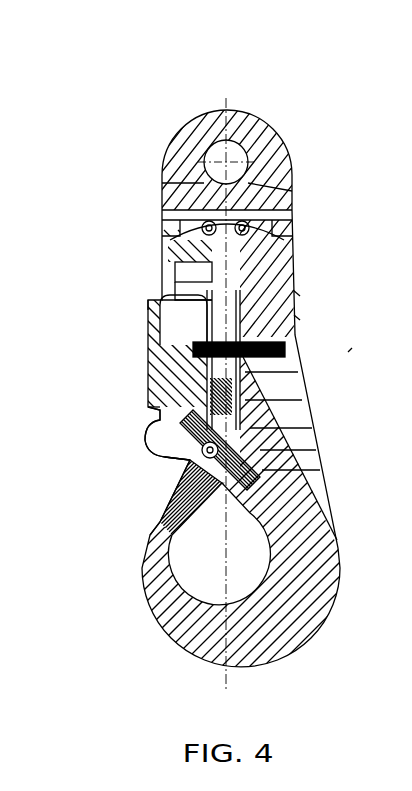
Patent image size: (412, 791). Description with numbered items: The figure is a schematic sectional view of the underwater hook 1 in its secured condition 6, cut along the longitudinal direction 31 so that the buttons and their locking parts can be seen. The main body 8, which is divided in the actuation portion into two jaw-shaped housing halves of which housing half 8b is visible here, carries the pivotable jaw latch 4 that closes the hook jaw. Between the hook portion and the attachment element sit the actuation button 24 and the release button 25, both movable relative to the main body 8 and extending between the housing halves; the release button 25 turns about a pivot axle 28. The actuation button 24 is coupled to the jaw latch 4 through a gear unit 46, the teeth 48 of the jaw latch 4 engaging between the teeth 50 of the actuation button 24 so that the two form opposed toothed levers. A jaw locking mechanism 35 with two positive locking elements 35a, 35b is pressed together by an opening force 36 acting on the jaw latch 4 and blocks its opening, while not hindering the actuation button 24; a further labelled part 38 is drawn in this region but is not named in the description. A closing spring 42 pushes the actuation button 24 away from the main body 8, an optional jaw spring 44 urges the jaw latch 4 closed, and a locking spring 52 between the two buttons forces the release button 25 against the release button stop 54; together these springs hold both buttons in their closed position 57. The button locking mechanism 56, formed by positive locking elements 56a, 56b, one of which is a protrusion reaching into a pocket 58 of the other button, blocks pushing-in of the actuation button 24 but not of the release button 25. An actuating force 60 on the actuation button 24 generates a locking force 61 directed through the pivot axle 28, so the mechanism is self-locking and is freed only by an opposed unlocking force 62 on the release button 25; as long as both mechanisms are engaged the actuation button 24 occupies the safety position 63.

The underwater hook 1 is at (318, 113).
The jaw latch 4 is at (165, 515).
The secured condition 6 is at (355, 349).
The main body 8 is at (338, 534).
The housing half 8b is at (284, 463).
The actuation button 24 is at (165, 345).
The release button 25 is at (293, 270).
The pivot axle 28 is at (165, 211).
The longitudinal direction 31 is at (222, 554).
The jaw locking mechanism 35 is at (286, 468).
The positive locking element 35a is at (298, 420).
The positive locking element 35b is at (298, 442).
The opening force 36 is at (177, 503).
The stop 38 is at (297, 372).
The closing spring 42 is at (168, 188).
The jaw spring 44 is at (298, 500).
The gear unit 46 is at (147, 448).
The teeth 48 is at (297, 392).
The teeth 50 is at (297, 355).
The locking spring 52 is at (150, 372).
The release button stop 54 is at (293, 218).
The button locking mechanism 56 is at (290, 232).
The positive locking element 56a is at (173, 285).
The positive locking element 56b is at (174, 266).
The closed position 57 is at (302, 318).
The pocket 58 is at (176, 320).
The actuating force 60 is at (148, 305).
The locking force 61 is at (172, 242).
The unlocking force 62 is at (300, 294).
The safety position 63 is at (112, 398).